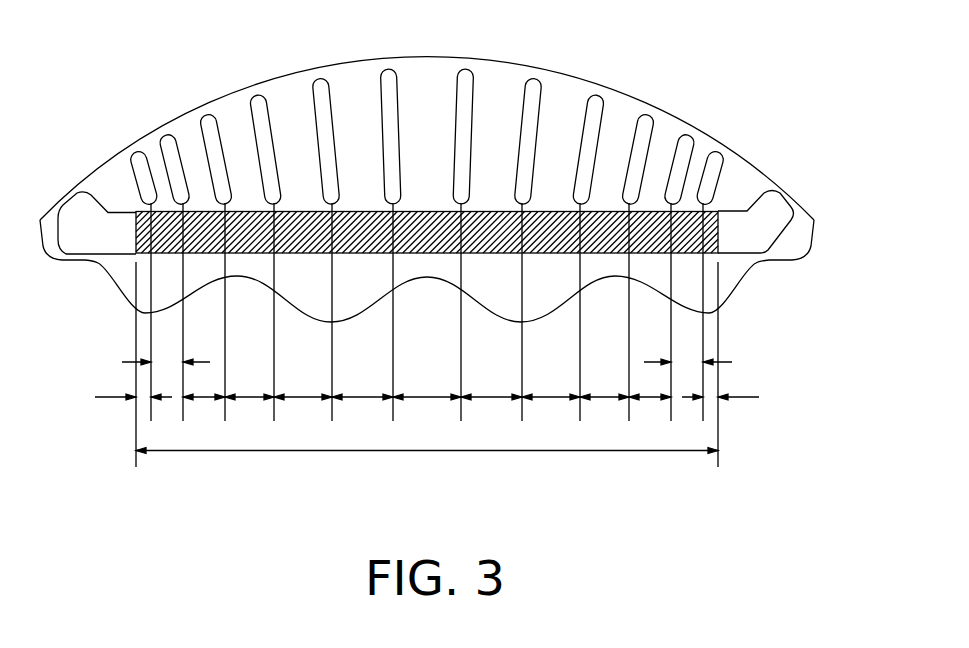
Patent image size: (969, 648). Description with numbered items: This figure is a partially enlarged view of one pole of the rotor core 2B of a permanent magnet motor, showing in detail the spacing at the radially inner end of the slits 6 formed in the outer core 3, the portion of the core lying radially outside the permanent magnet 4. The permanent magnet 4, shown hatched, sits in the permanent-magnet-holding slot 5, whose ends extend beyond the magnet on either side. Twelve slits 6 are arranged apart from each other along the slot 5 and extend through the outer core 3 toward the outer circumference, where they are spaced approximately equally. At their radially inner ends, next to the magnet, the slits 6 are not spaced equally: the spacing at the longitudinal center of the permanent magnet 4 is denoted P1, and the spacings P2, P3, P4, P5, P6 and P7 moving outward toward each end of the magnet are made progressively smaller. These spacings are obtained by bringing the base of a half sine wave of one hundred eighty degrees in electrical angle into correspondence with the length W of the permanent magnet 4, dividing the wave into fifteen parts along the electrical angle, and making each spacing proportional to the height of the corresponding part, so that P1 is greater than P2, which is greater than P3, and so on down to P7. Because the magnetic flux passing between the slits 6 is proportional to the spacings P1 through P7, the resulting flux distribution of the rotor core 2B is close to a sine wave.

The rotor core 2B is at (643, 84).
The outer core 3 is at (477, 88).
The permanent magnet 4 is at (248, 212).
The permanent-magnet-holding slot 5 is at (73, 213).
The slit 6 is at (510, 78).
The length of the permanent magnet W is at (427, 440).
The spacing at the longitudinal center P1 is at (427, 384).
The spacing P2 is at (427, 384).
The spacing P3 is at (427, 384).
The spacing P4 is at (427, 384).
The spacing P5 is at (427, 384).
The spacing P6 is at (427, 349).
The spacing P7 is at (427, 384).